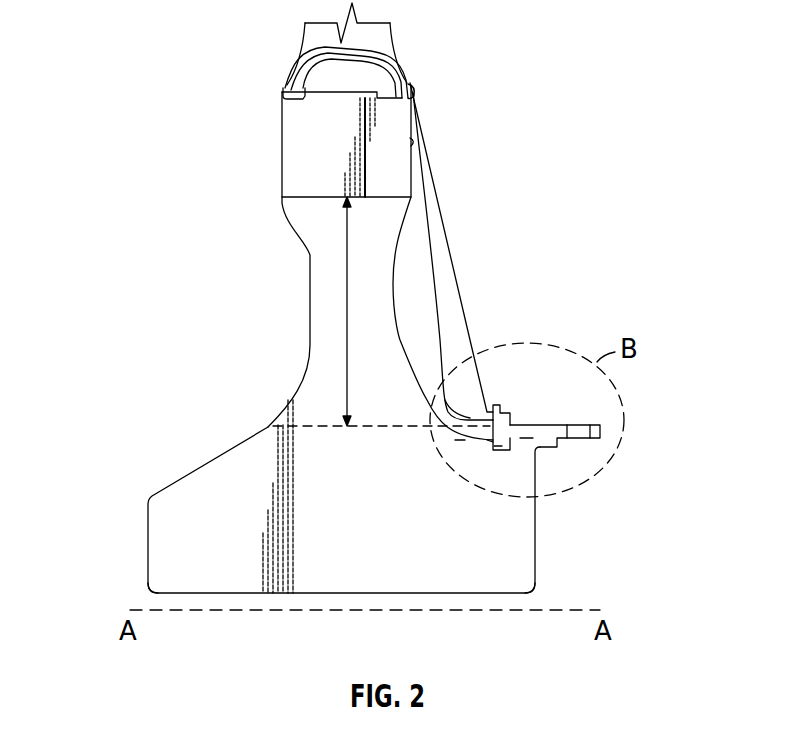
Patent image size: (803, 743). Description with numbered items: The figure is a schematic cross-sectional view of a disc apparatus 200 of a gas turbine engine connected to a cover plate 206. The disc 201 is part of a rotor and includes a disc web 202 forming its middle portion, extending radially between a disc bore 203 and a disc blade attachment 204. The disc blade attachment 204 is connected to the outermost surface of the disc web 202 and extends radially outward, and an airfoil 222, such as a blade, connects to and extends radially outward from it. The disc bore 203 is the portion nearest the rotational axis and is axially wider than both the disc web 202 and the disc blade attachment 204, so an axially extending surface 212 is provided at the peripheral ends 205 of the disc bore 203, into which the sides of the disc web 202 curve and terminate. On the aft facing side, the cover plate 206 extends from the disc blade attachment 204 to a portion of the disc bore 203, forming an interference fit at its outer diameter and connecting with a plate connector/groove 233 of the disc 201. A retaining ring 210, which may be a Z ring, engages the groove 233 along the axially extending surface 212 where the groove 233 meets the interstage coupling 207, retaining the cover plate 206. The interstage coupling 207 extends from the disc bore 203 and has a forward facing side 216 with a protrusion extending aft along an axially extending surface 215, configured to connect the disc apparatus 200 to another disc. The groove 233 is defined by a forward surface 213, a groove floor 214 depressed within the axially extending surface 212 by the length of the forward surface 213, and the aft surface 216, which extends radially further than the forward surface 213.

The disc apparatus 200 is at (122, 88).
The disc 201 is at (308, 275).
The disc web 202 is at (348, 328).
The disc bore 203 is at (365, 540).
The disc blade attachment 204 is at (342, 157).
The peripheral ends 205 is at (150, 543).
The cover plate 206 is at (447, 317).
The interstage coupling 207 is at (603, 430).
The retaining ring 210 is at (505, 405).
The axially extending surface 212 is at (455, 440).
The forward surface 213 is at (487, 440).
The groove floor 214 is at (498, 448).
The axially extending surface 215 is at (537, 425).
The forward facing side 216 is at (533, 440).
The airfoil 222 is at (290, 80).
The plate connector/groove 233 is at (493, 425).